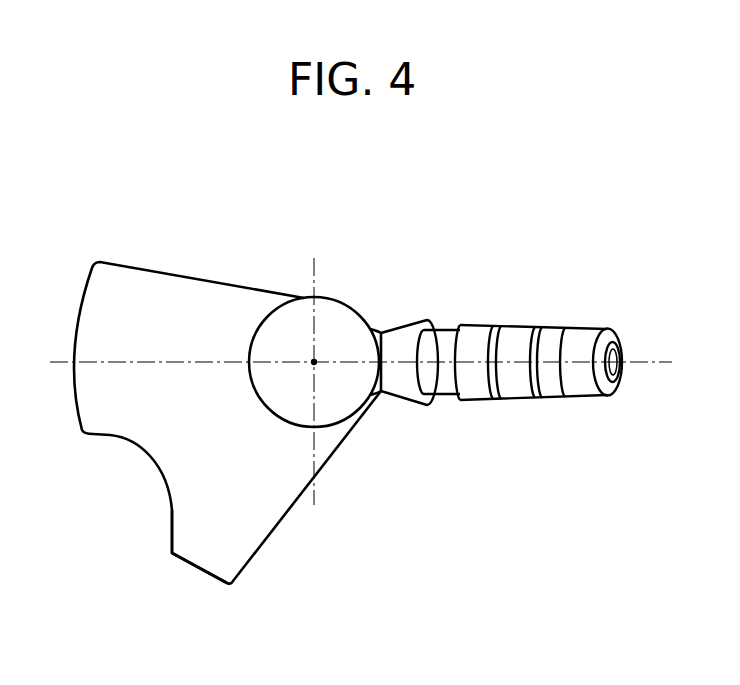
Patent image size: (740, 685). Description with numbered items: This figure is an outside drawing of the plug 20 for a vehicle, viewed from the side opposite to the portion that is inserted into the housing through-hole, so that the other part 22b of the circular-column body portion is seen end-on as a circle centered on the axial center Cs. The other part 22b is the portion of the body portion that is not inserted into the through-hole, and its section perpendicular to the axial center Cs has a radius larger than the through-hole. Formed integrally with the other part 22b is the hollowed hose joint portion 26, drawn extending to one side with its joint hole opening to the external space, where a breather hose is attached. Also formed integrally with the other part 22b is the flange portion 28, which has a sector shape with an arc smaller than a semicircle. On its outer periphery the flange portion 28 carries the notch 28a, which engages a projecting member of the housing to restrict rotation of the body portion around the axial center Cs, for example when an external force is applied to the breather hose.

The plug for a vehicle 20 is at (522, 180).
The other part of the body portion 22b is at (345, 330).
The hose joint portion 26 is at (554, 343).
The flange portion 28 is at (153, 297).
The notch 28a is at (170, 512).
The axial center Cs is at (312, 360).